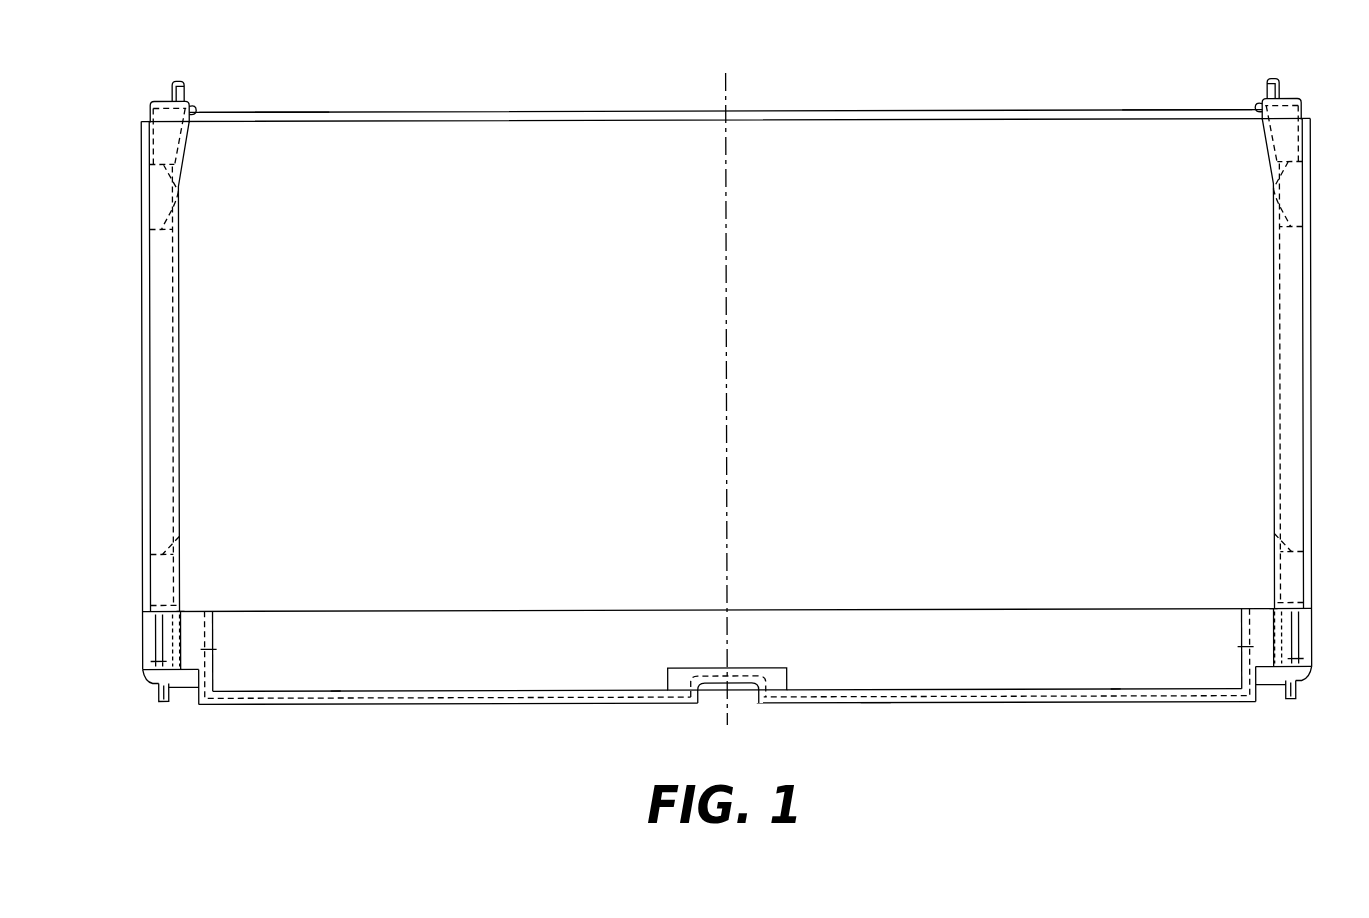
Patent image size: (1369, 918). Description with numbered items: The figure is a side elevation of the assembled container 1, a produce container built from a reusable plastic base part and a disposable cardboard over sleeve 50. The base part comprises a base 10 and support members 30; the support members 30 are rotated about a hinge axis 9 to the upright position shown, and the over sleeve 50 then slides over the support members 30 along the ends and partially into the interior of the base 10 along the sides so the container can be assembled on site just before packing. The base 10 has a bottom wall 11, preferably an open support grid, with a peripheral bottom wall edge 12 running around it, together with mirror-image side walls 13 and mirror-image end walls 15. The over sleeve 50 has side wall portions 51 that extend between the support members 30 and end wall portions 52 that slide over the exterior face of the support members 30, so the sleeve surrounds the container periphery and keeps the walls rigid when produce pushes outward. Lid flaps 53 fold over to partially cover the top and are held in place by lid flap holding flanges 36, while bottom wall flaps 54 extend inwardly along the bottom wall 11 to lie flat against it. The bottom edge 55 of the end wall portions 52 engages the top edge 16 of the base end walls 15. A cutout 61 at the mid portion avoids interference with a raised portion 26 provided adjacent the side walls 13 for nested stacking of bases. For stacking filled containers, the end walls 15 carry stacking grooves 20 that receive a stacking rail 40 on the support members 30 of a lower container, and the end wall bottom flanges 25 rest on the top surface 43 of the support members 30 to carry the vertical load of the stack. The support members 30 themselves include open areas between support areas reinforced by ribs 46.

The container 1 is at (873, 709).
The hinge axis 9 is at (155, 660).
The base 10 is at (992, 678).
The bottom wall 11 is at (290, 705).
The peripheral bottom wall edge 12 is at (212, 690).
The side walls 13 is at (480, 625).
The end walls 15 is at (200, 648).
The top edge 16 is at (183, 609).
The stacking grooves 20 is at (187, 698).
The end wall bottom flanges 25 is at (158, 690).
The raised portion 26 is at (738, 685).
The support members 30 is at (168, 320).
The lid flap holding flanges 36 is at (198, 108).
The stacking rail 40 is at (178, 80).
The top surface 43 is at (161, 99).
The ribs 46 is at (180, 208).
The over sleeve 50 is at (412, 132).
The side wall portions 51 is at (460, 239).
The end wall portions 52 is at (142, 372).
The lid flaps 53 is at (322, 111).
The bottom wall flaps 54 is at (335, 690).
The bottom edge 55 is at (150, 612).
The cutout 61 is at (786, 676).